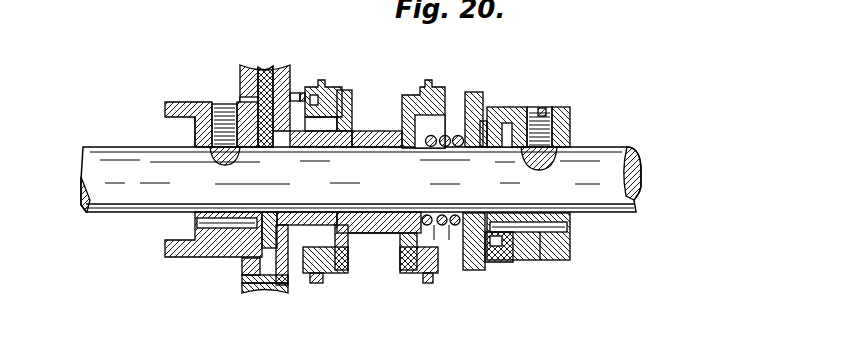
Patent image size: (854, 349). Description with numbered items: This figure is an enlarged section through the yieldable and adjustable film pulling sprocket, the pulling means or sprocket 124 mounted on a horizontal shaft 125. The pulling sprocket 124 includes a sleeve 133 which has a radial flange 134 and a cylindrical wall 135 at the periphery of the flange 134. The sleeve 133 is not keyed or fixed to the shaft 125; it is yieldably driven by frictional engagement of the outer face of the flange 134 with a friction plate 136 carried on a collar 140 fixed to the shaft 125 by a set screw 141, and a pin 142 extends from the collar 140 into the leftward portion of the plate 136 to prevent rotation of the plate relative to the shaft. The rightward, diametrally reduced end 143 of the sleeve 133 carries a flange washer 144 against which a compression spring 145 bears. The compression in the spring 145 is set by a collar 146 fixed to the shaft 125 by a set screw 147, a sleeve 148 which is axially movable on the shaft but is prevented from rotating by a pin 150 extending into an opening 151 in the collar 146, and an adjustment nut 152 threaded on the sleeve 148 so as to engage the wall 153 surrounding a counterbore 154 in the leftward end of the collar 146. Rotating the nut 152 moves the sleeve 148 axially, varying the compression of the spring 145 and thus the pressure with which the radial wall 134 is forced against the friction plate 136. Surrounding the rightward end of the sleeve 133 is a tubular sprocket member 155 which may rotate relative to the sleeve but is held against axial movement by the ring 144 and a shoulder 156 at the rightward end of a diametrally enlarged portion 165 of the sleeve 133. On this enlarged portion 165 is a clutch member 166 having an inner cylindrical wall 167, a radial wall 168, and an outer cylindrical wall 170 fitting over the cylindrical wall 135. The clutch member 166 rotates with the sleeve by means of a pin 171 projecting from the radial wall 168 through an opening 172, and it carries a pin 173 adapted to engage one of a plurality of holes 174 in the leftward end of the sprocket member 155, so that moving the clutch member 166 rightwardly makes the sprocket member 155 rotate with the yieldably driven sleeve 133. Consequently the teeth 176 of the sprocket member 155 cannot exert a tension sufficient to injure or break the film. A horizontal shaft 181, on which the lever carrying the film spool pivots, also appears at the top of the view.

The pulling sprocket 124 is at (457, 82).
The horizontal shaft 125 is at (641, 163).
The sleeve 133 is at (344, 112).
The radial flange 134 is at (241, 262).
The cylindrical wall 135 is at (247, 281).
The friction plate 136 is at (232, 112).
The collar 140 is at (165, 104).
The set screw 141 is at (205, 126).
The pin 142 is at (215, 232).
The diametrally reduced end 143 is at (348, 136).
The flange washer 144 is at (401, 236).
The compression spring 145 is at (424, 226).
The collar 146 is at (570, 108).
The set screw 147 is at (556, 132).
The sleeve 148 is at (478, 104).
The pin 150 is at (543, 262).
The opening 151 is at (500, 245).
The adjustment nut 152 is at (486, 240).
The wall 153 is at (504, 107).
The counterbore 154 is at (509, 125).
The tubular sprocket member 155 is at (338, 248).
The shoulder 156 is at (360, 148).
The diametrally enlarged portion 165 is at (303, 222).
The clutch member 166 is at (262, 60).
The inner cylindrical wall 167 is at (315, 125).
The radial wall 168 is at (292, 92).
The outer cylindrical wall 170 is at (250, 289).
The pin 171 is at (280, 266).
The opening 172 is at (292, 256).
The pin 173 is at (289, 99).
The holes 174 is at (309, 128).
The teeth 176 is at (428, 80).
The horizontal shaft 181 is at (120, 1).